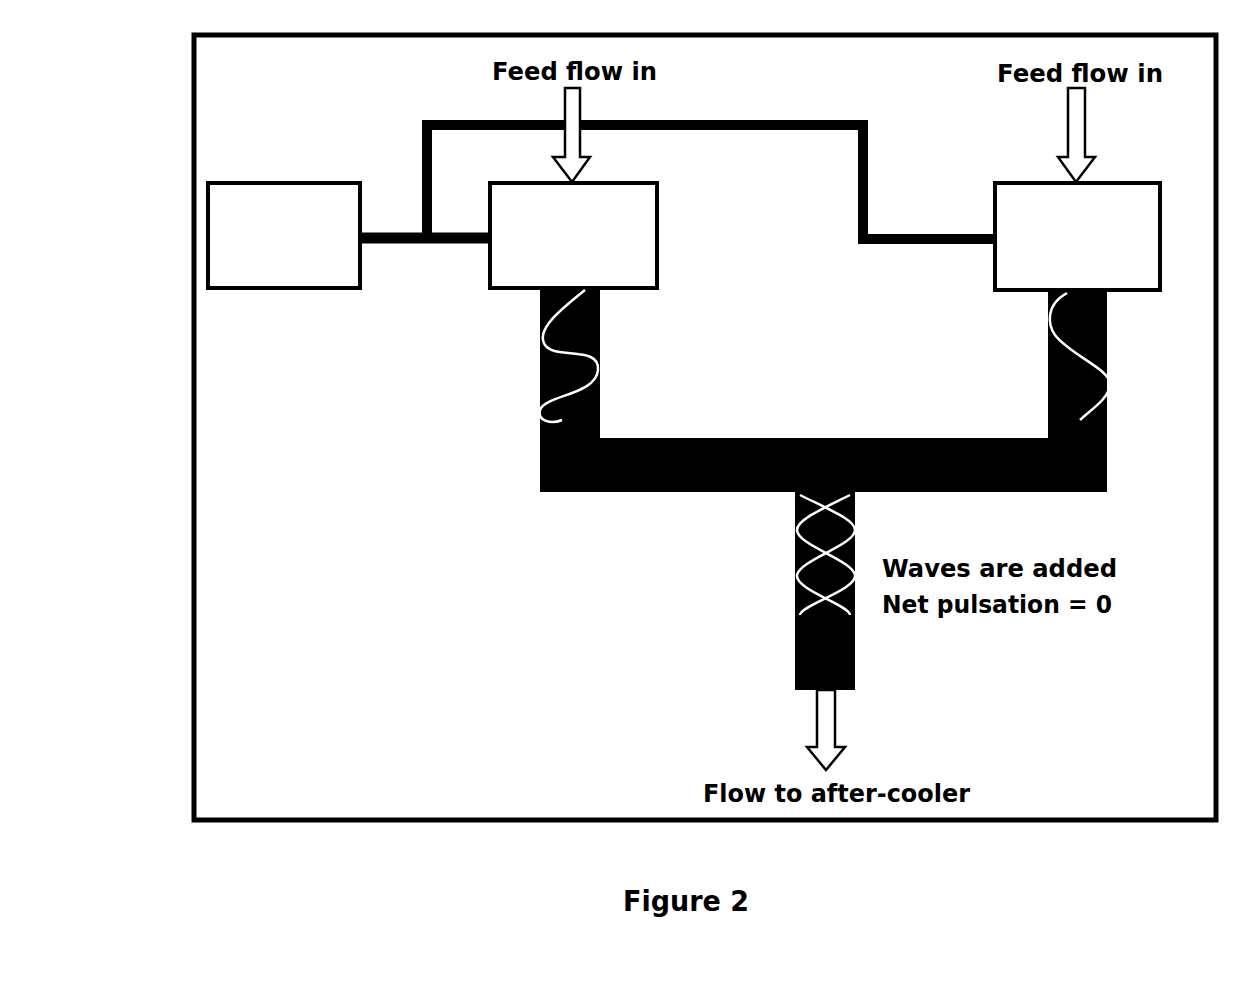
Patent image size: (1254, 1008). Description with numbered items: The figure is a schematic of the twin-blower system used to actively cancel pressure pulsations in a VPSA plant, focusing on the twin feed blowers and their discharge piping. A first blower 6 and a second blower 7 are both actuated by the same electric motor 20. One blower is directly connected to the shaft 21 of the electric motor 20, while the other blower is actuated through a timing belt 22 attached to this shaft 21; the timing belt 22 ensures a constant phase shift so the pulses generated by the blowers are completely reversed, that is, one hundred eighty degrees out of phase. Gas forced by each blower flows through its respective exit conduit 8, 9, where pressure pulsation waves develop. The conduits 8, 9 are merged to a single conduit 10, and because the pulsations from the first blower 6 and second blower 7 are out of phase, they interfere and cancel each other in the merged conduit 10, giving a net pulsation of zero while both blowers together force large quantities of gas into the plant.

The first blower 6 is at (587, 238).
The second blower 7 is at (1091, 240).
The conduit 8 is at (668, 390).
The conduit 9 is at (982, 390).
The single conduit 10 is at (805, 591).
The electric motor 20 is at (284, 256).
The shaft 21 is at (425, 257).
The timing belt 22 is at (697, 165).